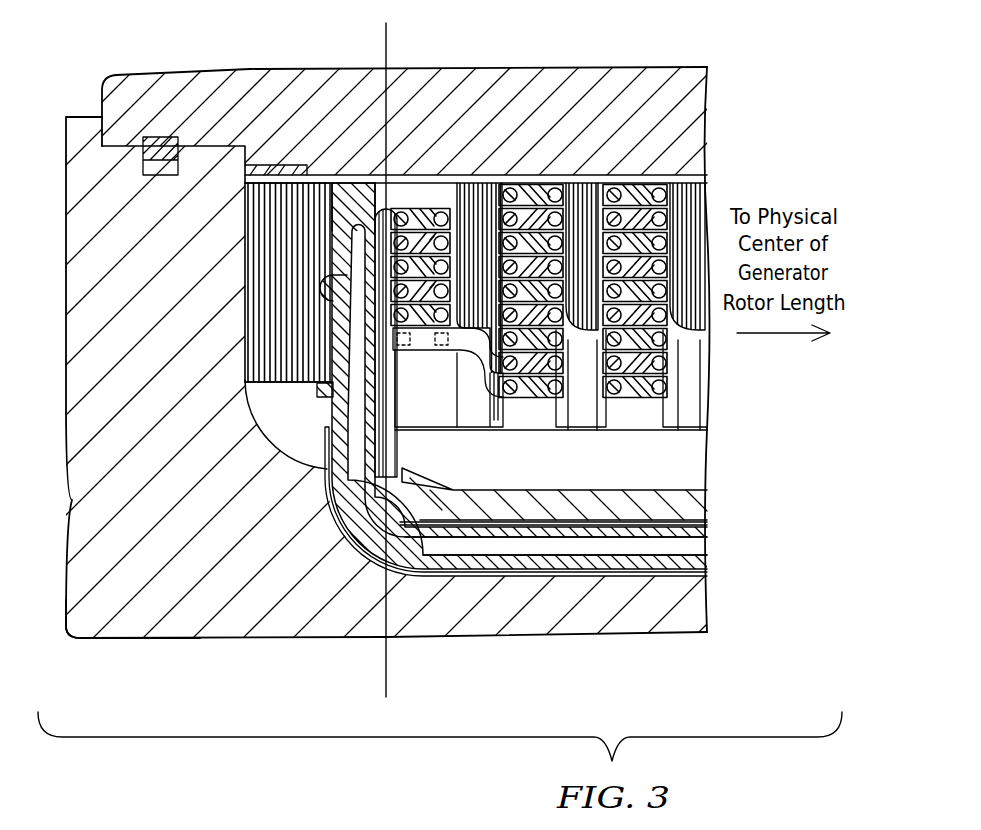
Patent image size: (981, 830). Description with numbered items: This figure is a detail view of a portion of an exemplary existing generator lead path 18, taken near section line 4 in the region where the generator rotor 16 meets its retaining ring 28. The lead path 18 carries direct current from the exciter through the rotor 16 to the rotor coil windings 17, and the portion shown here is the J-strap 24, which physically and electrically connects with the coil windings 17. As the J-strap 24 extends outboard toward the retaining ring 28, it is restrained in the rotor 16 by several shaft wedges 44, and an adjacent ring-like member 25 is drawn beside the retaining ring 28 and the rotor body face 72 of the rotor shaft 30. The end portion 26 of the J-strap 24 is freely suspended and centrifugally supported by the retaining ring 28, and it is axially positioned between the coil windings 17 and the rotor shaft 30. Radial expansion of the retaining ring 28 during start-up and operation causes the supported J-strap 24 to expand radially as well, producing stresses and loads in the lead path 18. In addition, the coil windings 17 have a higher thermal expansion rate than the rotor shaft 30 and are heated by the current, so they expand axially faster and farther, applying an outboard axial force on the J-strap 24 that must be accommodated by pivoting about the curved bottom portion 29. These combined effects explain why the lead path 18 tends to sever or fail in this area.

The section line 4- 4 is at (386, 23).
The generator rotor 16 is at (131, 316).
The rotor coil windings 17 is at (640, 213).
The conductive lead path 18 is at (677, 536).
The J-strap 24 is at (573, 547).
The end ring 25 is at (343, 278).
The end portion 26 is at (358, 467).
The retaining ring 28 is at (505, 88).
The curved bottom portion 29 is at (375, 522).
The rotor shaft 30 is at (137, 610).
The shaft wedges 44 is at (423, 498).
The rotor body face 72 is at (245, 285).